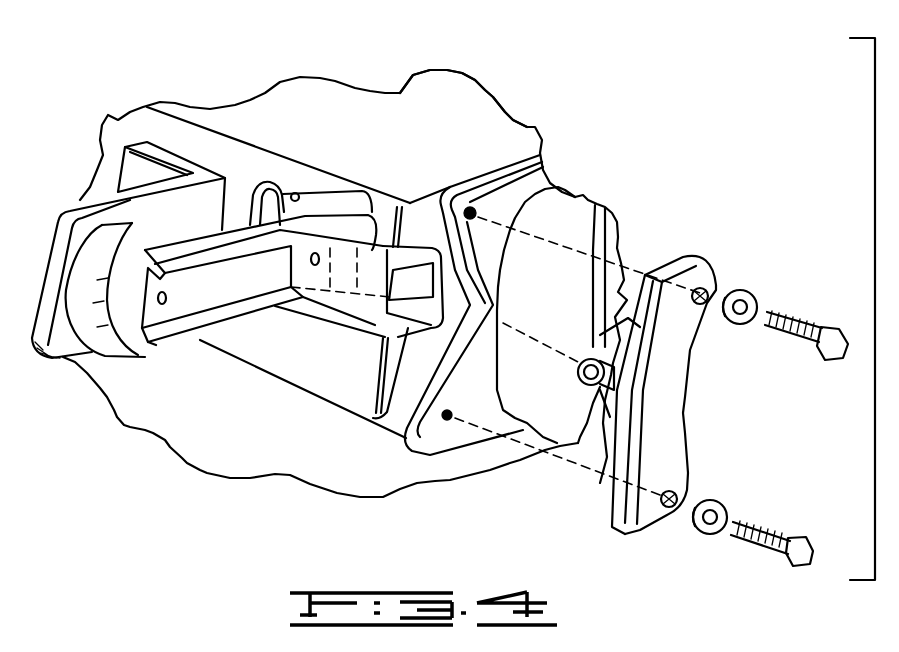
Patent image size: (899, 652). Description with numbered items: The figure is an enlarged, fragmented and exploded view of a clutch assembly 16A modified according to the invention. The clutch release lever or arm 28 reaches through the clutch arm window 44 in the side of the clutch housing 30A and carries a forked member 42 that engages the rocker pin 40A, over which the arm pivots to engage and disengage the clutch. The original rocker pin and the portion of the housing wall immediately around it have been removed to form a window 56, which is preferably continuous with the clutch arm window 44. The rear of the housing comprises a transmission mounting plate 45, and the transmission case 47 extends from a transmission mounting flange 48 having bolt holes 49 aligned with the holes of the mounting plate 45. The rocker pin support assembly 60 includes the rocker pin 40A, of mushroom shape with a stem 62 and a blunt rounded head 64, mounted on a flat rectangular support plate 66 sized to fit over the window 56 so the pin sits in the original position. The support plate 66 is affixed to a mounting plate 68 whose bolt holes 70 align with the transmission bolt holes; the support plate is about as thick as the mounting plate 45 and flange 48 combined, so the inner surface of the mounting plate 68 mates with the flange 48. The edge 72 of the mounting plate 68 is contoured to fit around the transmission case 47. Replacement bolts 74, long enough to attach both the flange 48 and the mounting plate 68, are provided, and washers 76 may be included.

The clutch release lever or arm 28 is at (250, 237).
The clutch arm window 44 is at (293, 195).
The transmission mounting plate 45 is at (471, 205).
The clutch housing 30A is at (477, 107).
The bolt holes 49 is at (472, 207).
The clutch assembly 16A is at (552, 297).
The transmission mounting flange 48 is at (540, 187).
The transmission case 47 is at (588, 198).
The blunt rounded head 64 is at (607, 204).
The stem 62 is at (616, 217).
The support plate 66 is at (635, 327).
The rocker pin support assembly 60 is at (730, 374).
The bolt holes 70 is at (704, 290).
The washers 76 is at (746, 303).
The replacement bolts 74 is at (796, 322).
The edge 72 is at (695, 375).
The mounting plate 68 is at (672, 410).
The forked member 42 is at (363, 287).
The window 56 is at (373, 433).
The rocker pin 40A is at (603, 410).